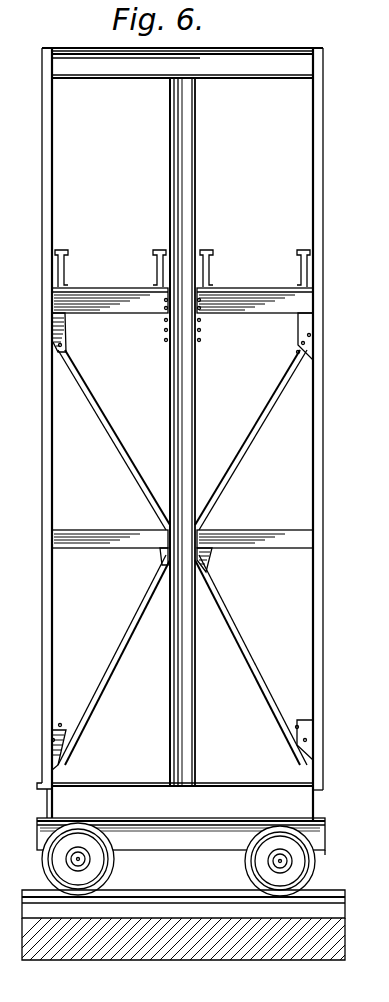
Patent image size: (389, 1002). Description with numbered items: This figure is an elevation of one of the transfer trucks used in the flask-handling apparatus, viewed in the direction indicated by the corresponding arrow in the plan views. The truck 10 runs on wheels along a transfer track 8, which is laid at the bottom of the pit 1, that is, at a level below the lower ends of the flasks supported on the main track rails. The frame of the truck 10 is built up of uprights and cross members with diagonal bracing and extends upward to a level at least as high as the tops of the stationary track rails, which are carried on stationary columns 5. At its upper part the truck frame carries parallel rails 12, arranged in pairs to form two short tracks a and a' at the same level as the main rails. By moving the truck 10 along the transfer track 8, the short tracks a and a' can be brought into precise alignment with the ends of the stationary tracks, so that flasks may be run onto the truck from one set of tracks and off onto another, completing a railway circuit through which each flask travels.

The pit 1 is at (161, 431).
The stationary columns 5 is at (36, 150).
The transfer track 8 is at (186, 893).
The transfer truck 10 is at (25, 821).
The parallel rails 12 is at (66, 273).
The short track a is at (255, 283).
The short track a' is at (110, 284).